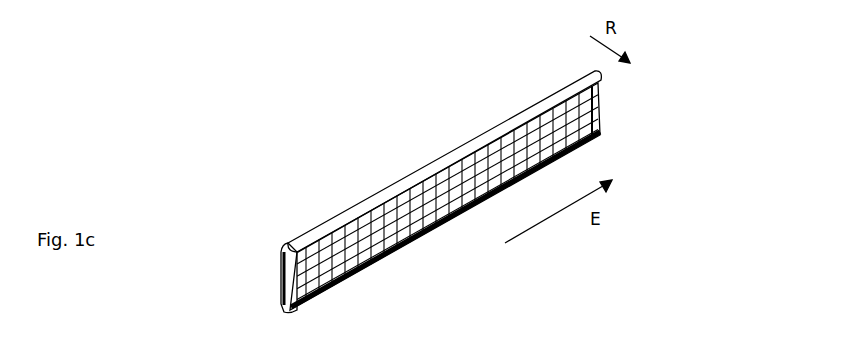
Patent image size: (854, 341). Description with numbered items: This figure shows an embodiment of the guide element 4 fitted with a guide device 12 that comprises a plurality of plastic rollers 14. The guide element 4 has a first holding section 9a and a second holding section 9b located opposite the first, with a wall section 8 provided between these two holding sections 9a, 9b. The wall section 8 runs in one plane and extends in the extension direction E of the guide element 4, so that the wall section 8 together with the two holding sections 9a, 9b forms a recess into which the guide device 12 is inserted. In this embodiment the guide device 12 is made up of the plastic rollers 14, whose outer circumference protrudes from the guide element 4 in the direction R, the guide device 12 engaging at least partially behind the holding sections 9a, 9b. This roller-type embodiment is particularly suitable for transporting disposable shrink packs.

The guide element 4 is at (298, 216).
The wall section 8 is at (296, 284).
The first holding section 9a is at (462, 155).
The second holding section 9b is at (385, 256).
The guide device 12 is at (600, 134).
The plastic rollers 14 is at (600, 110).